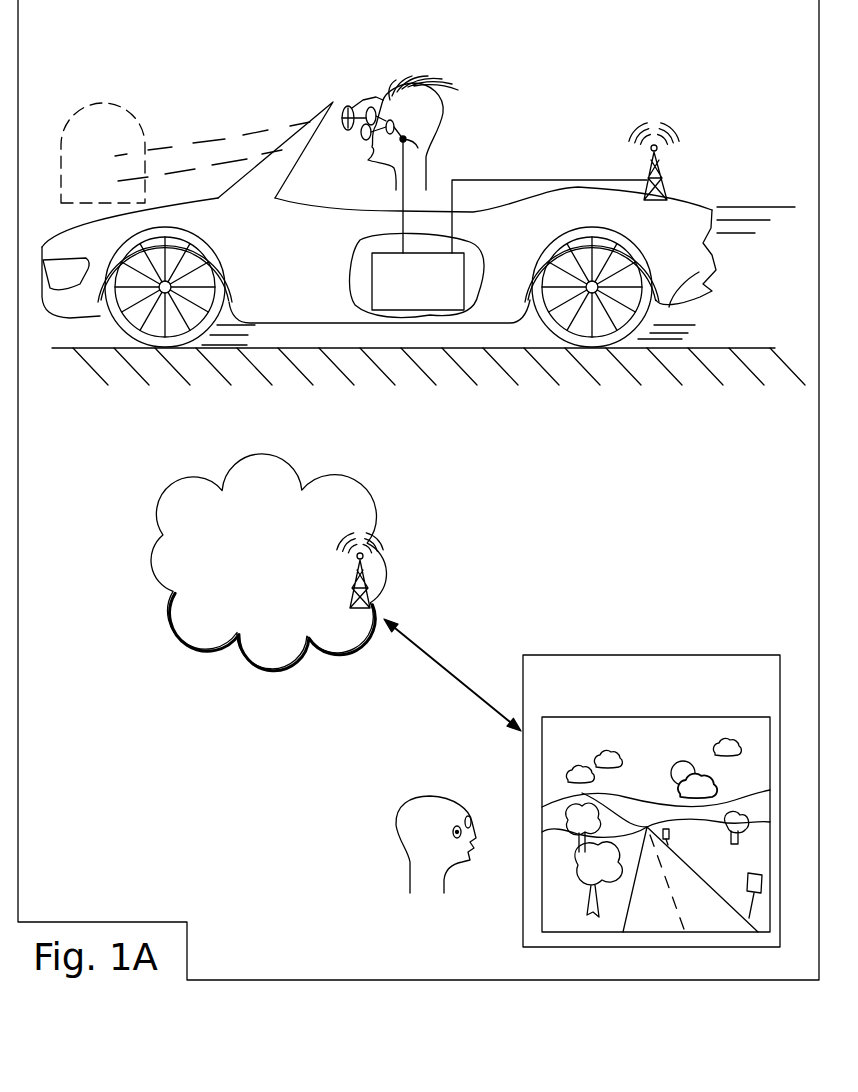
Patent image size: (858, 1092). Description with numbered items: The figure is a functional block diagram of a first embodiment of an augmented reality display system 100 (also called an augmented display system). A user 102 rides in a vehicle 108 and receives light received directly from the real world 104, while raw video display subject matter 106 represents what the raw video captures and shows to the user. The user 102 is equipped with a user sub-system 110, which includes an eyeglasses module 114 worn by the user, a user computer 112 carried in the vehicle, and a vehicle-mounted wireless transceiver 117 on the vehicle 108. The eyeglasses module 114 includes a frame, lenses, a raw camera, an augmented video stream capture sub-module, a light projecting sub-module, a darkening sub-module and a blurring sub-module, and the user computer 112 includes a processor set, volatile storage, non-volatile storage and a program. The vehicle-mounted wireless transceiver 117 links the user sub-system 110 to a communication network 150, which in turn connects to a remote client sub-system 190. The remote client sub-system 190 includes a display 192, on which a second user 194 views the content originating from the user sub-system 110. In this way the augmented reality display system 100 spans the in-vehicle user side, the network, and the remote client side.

The augmented reality display system 100 is at (188, 898).
The user 102 is at (443, 122).
The light received directly from the real world 104 is at (202, 140).
The raw video display subject matter 106 is at (117, 102).
The vehicle 108 is at (712, 265).
The user sub-system 110 is at (369, 80).
The user computer 112 is at (406, 305).
The eyeglasses module 114 is at (364, 133).
The vehicle-mounted wireless transceiver 117 is at (645, 176).
The communication network 150 is at (299, 590).
The remote client sub-system 190 is at (706, 706).
The display 192 is at (680, 743).
The user 194 is at (395, 830).